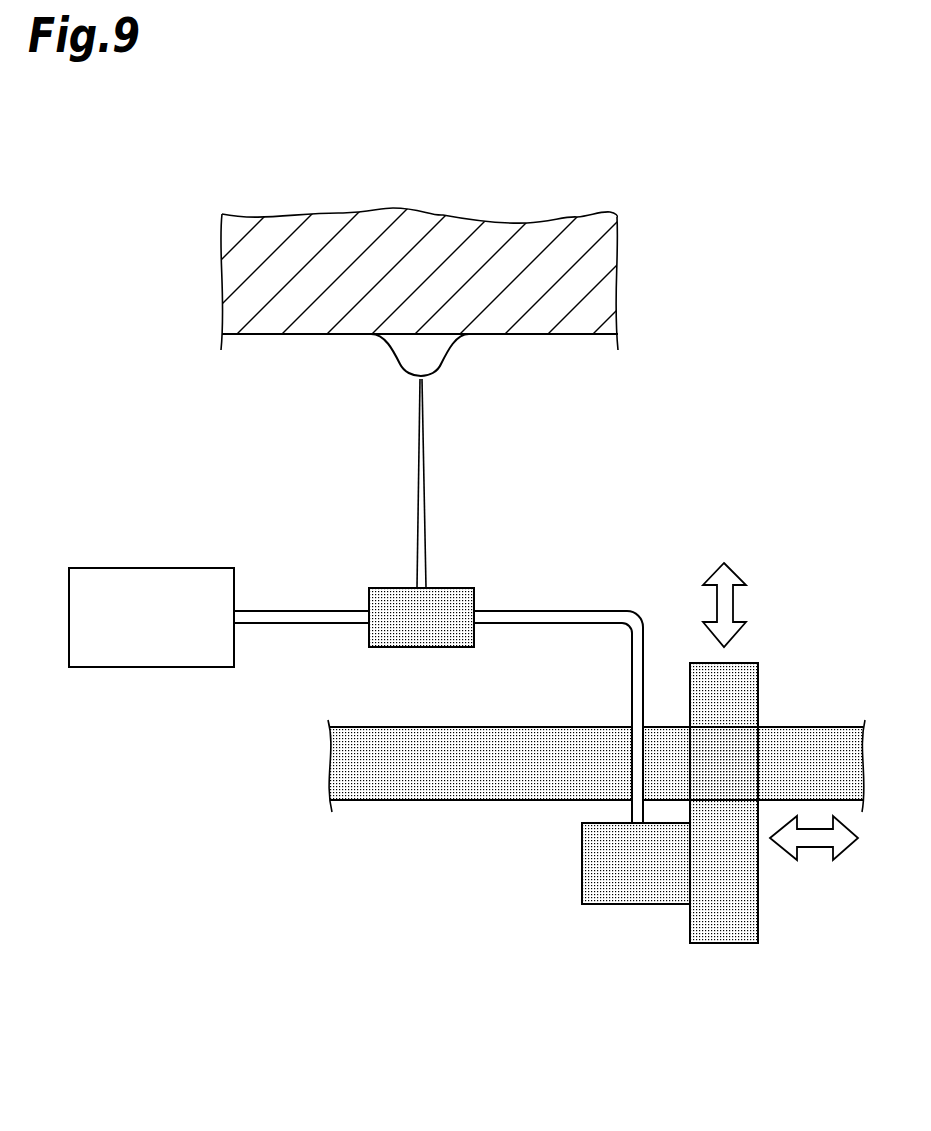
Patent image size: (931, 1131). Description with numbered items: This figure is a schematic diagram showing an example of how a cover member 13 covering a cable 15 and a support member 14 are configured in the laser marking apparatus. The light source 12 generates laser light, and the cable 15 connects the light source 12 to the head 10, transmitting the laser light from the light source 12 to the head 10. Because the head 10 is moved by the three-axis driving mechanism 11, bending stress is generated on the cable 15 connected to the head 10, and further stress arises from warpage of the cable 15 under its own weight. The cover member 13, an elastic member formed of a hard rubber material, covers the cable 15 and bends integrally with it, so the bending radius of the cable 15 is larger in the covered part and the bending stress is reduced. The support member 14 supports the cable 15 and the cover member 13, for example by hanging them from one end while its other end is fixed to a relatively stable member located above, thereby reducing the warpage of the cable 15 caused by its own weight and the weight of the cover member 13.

The head 10 is at (582, 882).
The three-axis driving mechanism 11 is at (760, 679).
The light source 12 is at (187, 568).
The cover member 13 is at (456, 588).
The support member 14 is at (426, 462).
The cable 15 is at (585, 611).